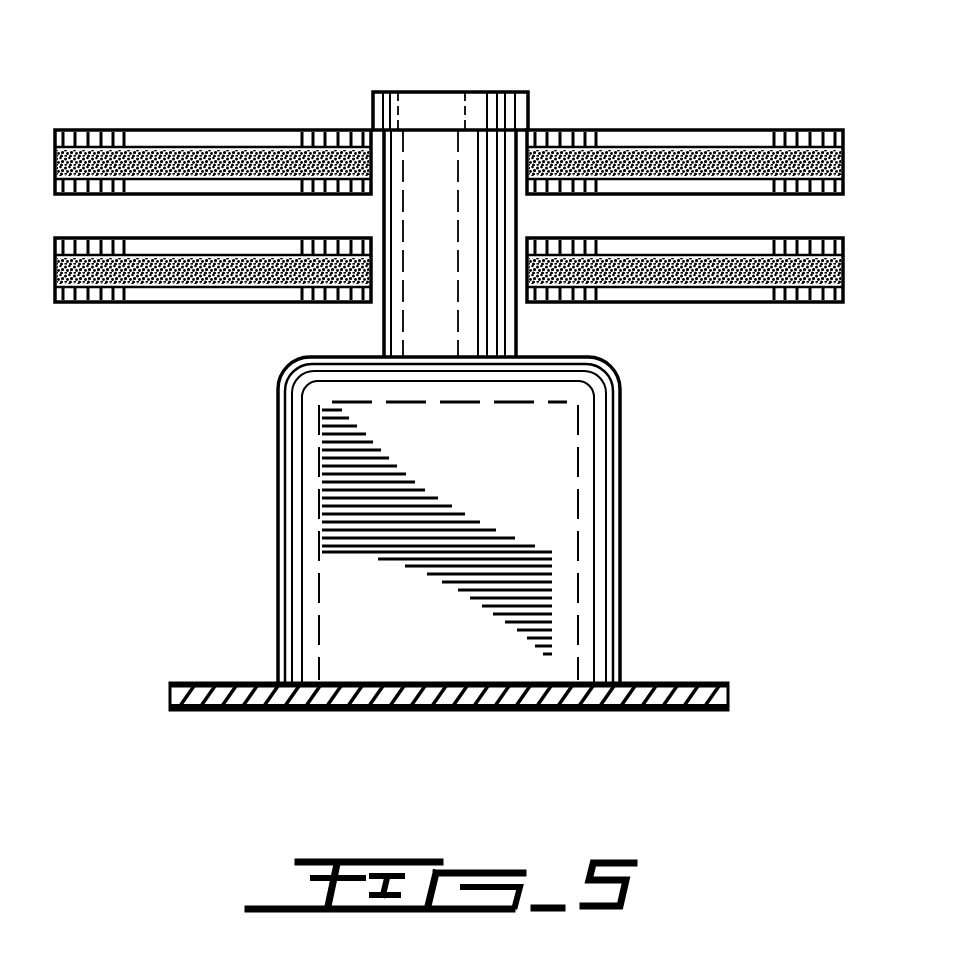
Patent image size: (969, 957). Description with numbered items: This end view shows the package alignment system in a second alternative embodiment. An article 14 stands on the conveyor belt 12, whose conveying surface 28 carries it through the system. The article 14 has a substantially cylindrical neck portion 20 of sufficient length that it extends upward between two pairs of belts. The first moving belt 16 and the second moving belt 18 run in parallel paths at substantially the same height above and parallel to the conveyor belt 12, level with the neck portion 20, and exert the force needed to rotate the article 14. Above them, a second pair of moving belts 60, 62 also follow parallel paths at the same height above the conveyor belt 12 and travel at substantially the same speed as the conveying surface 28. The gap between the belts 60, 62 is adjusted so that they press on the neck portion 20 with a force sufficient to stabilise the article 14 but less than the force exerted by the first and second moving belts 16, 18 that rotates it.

The conveyor belt 12 is at (300, 710).
The article 14 is at (280, 525).
The first moving belt 16 is at (760, 287).
The second moving belt 18 is at (137, 290).
The neck portion 20 is at (430, 165).
The conveying surface 28 is at (662, 683).
The second pair moving belt 60 is at (765, 165).
The second pair moving belt 62 is at (130, 165).